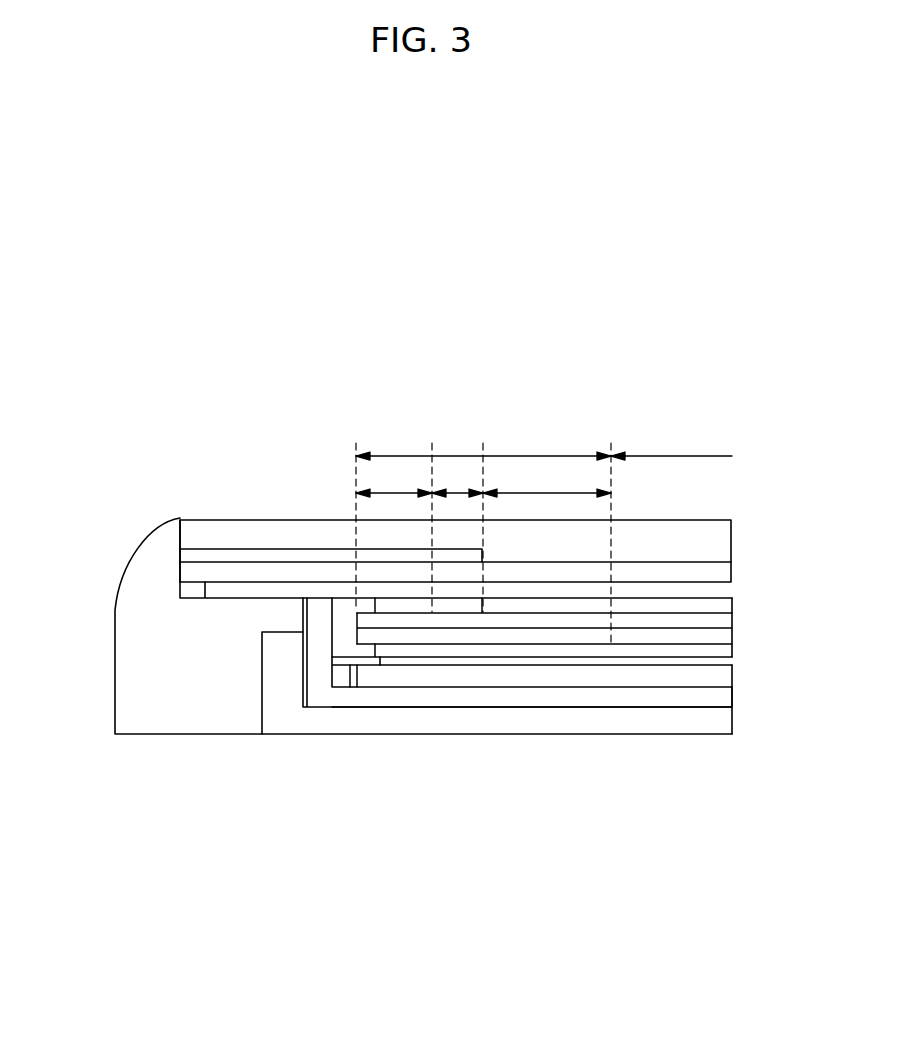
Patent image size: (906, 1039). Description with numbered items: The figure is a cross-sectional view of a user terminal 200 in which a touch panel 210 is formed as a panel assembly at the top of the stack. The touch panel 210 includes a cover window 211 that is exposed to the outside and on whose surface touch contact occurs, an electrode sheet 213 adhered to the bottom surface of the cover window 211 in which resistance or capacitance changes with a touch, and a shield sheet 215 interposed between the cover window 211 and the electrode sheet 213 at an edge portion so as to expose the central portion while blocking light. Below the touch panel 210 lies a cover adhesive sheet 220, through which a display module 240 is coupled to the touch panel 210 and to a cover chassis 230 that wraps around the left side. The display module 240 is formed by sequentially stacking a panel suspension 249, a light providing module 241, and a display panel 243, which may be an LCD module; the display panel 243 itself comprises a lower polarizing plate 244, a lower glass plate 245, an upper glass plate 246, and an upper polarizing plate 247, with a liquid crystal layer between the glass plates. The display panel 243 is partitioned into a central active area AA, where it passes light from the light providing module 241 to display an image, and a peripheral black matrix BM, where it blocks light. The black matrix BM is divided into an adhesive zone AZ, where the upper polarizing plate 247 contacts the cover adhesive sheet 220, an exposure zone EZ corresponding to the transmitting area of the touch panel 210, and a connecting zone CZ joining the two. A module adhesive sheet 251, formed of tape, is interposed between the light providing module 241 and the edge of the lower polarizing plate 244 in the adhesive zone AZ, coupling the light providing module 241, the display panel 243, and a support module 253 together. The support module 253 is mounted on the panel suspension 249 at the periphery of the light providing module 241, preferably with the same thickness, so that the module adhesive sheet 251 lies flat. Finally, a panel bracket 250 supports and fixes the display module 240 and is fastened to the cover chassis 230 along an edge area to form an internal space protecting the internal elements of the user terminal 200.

The user terminal 200 is at (741, 307).
The touch panel 210 is at (505, 538).
The cover window 211 is at (712, 542).
The electrode sheet 213 is at (712, 569).
The shield sheet 215 is at (473, 557).
The cover adhesive sheet 220 is at (221, 592).
The cover chassis 230 is at (147, 716).
The display module 240 is at (517, 738).
The light providing module 241 is at (450, 677).
The display panel 243 is at (532, 716).
The lower polarizing plate 244 is at (643, 792).
The lower glass plate 245 is at (532, 635).
The upper glass plate 246 is at (575, 620).
The upper polarizing plate 247 is at (630, 603).
The panel suspension 249 is at (668, 697).
The panel bracket 250 is at (273, 722).
The module adhesive sheet 251 is at (368, 659).
The support module 253 is at (347, 730).
The black matrix BM is at (483, 538).
The active area AA is at (671, 447).
The adhesive zone AZ is at (394, 481).
The connecting zone CZ is at (457, 481).
The exposure zone EZ is at (547, 481).